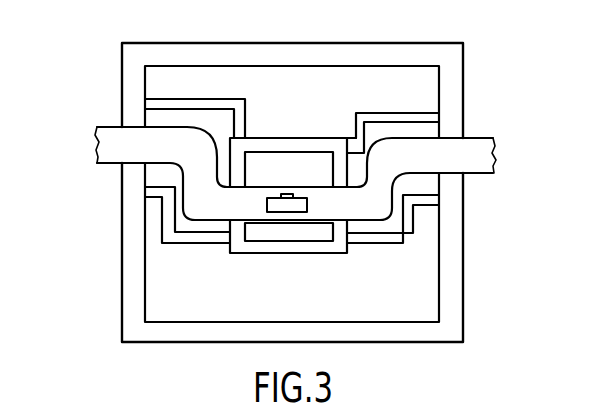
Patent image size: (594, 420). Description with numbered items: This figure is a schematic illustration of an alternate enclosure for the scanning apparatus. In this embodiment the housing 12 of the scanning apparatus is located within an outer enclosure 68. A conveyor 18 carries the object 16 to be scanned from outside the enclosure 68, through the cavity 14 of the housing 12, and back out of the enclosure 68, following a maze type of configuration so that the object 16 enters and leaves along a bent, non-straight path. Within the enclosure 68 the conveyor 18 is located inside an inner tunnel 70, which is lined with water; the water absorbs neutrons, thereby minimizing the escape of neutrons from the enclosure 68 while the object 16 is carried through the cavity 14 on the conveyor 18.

The outer enclosure 68 is at (447, 43).
The conveyor 18 is at (475, 137).
The housing 12 is at (282, 139).
The cavity 14 is at (270, 241).
The object 16 is at (309, 206).
The inner tunnel 70 is at (160, 109).